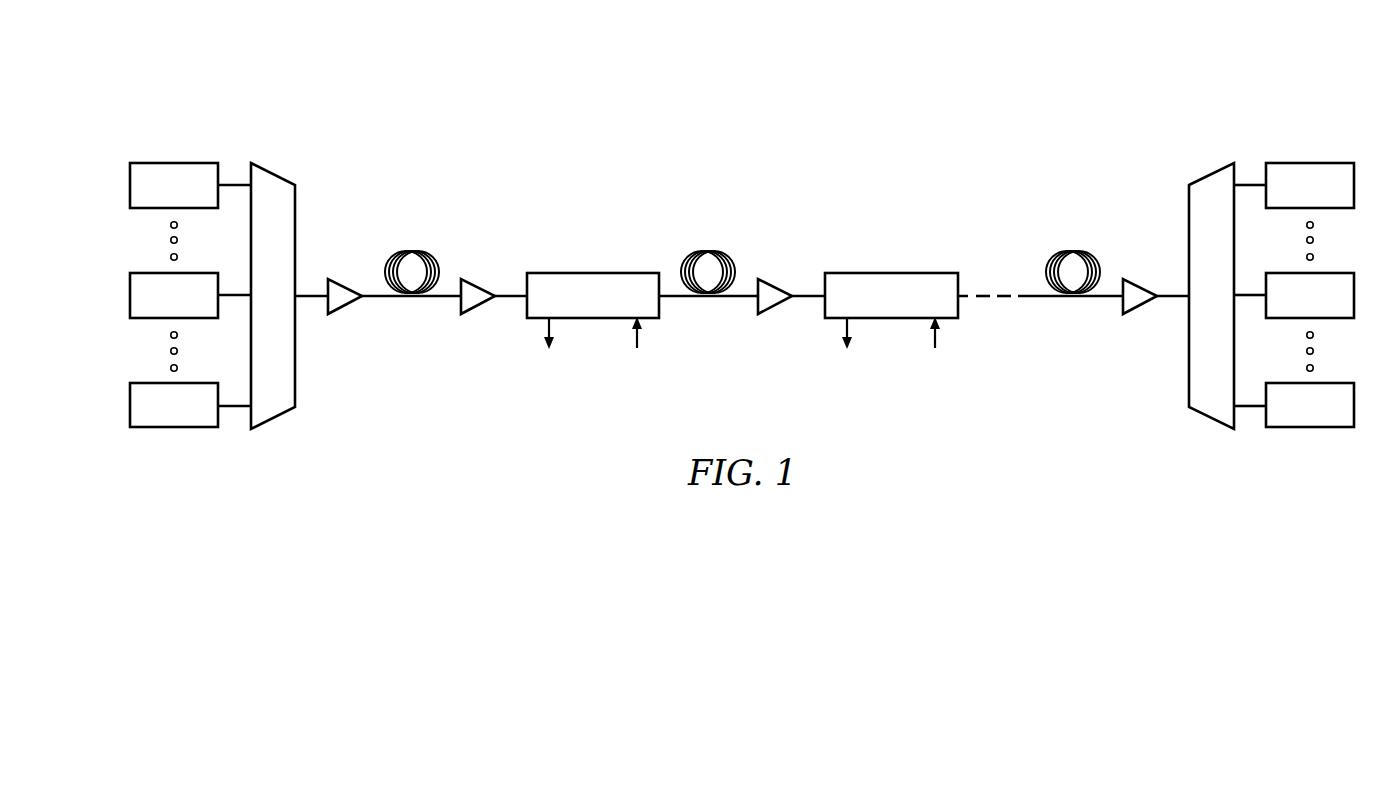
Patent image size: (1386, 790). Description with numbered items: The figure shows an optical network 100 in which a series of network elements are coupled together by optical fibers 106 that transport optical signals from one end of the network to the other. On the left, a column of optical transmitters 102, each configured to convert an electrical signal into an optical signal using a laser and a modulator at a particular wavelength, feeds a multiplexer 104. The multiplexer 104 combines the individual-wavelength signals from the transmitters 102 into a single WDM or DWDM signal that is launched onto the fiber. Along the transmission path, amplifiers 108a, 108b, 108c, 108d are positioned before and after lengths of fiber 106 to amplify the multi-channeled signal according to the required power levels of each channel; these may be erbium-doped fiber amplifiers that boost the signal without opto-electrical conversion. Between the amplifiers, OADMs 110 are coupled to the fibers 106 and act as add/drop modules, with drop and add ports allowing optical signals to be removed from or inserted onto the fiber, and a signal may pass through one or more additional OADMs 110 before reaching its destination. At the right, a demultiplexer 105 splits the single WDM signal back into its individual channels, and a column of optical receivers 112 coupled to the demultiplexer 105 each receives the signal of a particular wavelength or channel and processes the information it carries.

The optical network 100 is at (1054, 66).
The optical transmitter 102 is at (168, 162).
The multiplexer 104 is at (273, 174).
The demultiplexer 105 is at (1211, 171).
The optical fiber 106 is at (410, 250).
The amplifier 108a is at (353, 301).
The amplifier 108b is at (497, 263).
The amplifier 108c is at (794, 263).
The amplifier 108d is at (1157, 261).
The optical add/drop multiplexer (OADM) 110 is at (593, 272).
The optical receiver 112 is at (1316, 162).